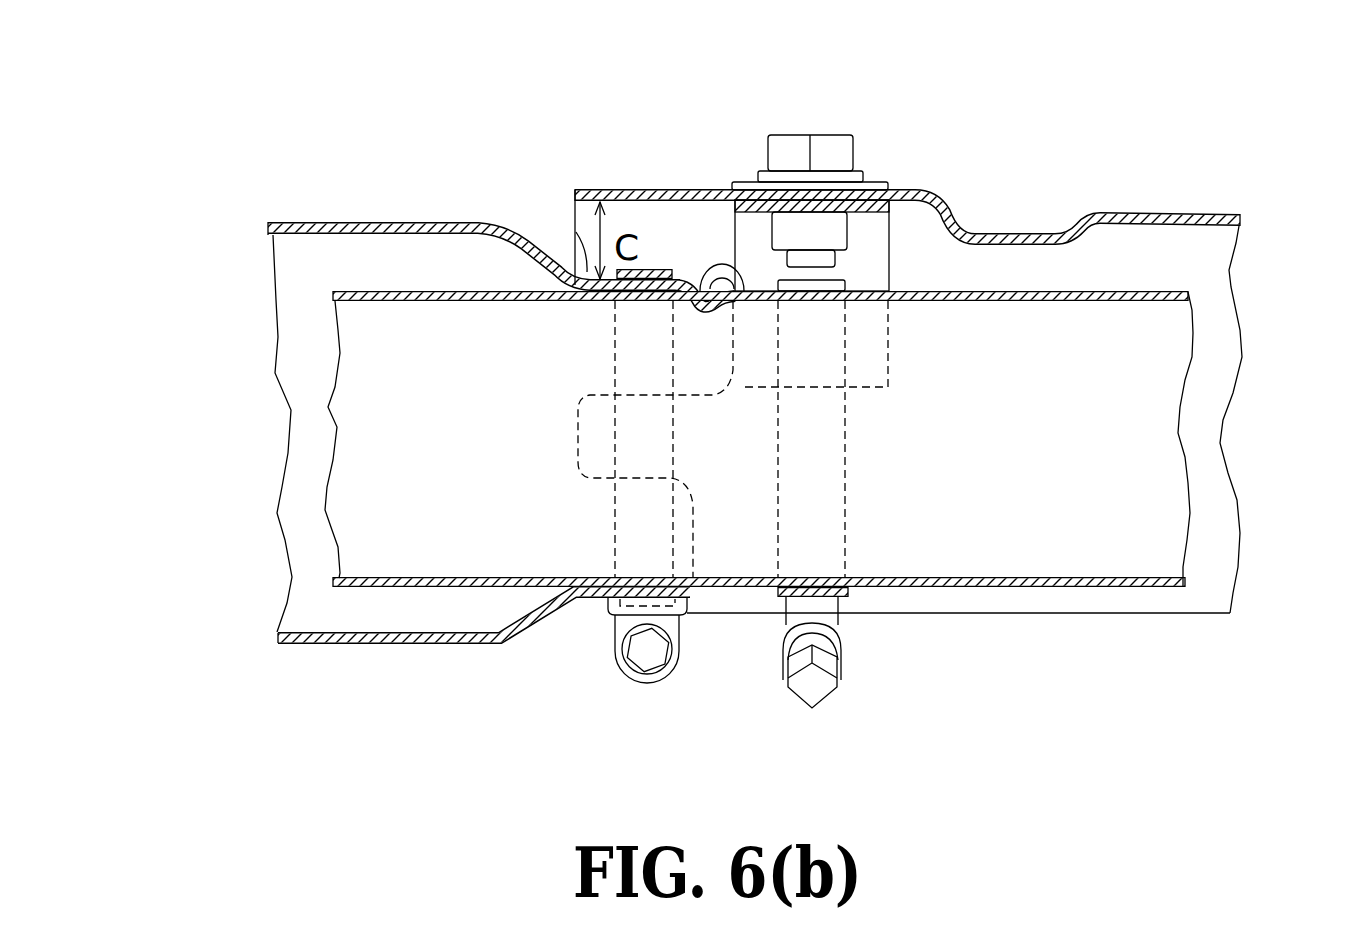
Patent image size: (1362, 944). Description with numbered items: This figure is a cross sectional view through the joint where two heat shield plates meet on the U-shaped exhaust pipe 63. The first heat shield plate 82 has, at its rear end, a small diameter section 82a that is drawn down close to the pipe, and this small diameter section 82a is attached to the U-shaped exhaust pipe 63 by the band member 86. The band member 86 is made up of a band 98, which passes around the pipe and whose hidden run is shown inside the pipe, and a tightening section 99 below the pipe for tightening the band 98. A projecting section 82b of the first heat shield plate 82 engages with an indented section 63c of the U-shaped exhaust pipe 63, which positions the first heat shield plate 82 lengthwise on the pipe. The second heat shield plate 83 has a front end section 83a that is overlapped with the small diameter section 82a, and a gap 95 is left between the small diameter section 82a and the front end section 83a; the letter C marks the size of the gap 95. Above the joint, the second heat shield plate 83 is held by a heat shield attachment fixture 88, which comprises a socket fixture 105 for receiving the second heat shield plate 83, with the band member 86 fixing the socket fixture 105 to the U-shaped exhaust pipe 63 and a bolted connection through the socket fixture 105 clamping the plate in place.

The first heat shield plate 82 is at (362, 218).
The small diameter section 82a is at (580, 224).
The projecting section 82b is at (675, 310).
The U-shaped exhaust pipe 63 is at (377, 290).
The indented section 63c is at (735, 265).
The second heat shield plate 83 is at (1198, 212).
The front end section 83a is at (647, 190).
The gap 95 is at (572, 212).
The heat shield attachment fixture 88 is at (870, 152).
The socket fixture 105 is at (890, 352).
The band 98 is at (848, 452).
The band member 86 is at (614, 664).
The tightening section 99 is at (864, 673).